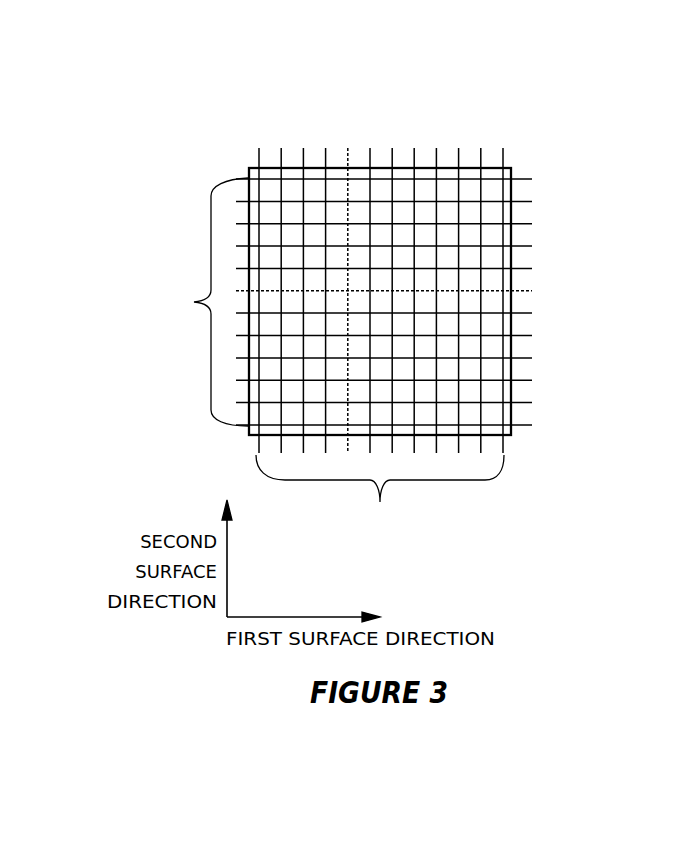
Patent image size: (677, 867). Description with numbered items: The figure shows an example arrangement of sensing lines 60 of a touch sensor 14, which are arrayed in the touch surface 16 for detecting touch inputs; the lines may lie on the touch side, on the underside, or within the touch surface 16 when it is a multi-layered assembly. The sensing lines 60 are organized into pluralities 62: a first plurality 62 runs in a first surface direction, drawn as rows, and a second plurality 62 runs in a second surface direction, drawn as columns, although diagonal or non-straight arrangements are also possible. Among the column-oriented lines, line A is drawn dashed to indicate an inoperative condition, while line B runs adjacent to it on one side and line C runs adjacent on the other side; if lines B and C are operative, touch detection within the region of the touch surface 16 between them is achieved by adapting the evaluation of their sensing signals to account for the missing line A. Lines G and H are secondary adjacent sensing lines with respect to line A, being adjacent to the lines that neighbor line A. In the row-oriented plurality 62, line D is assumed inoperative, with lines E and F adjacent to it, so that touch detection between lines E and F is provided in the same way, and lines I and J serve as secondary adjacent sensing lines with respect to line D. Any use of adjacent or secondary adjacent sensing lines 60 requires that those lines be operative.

The touch sensor 14 is at (218, 111).
The touch surface 16 is at (511, 168).
The sensing lines 60 is at (259, 157).
The plurality of sensing lines 62 is at (334, 355).
The line A is at (348, 157).
The line B is at (326, 157).
The line C is at (370, 157).
The line D is at (520, 291).
The line E is at (520, 268).
The line F is at (520, 313).
The line G is at (303, 157).
The line H is at (392, 157).
The line I is at (520, 246).
The line J is at (520, 335).